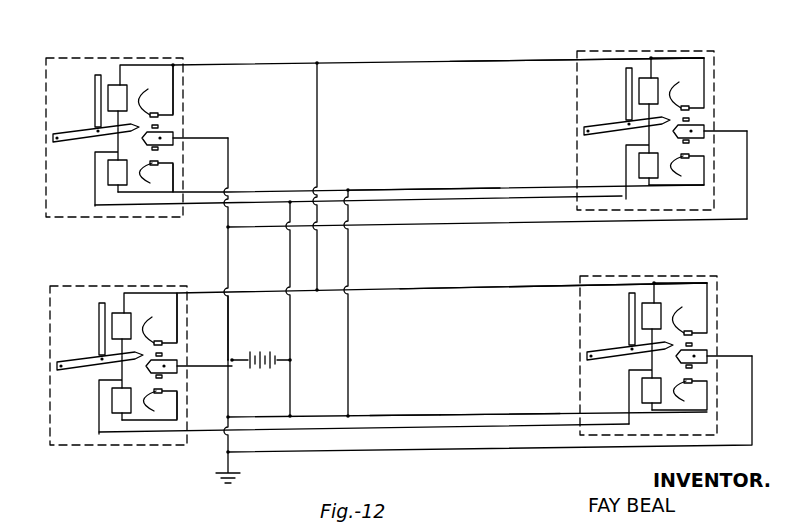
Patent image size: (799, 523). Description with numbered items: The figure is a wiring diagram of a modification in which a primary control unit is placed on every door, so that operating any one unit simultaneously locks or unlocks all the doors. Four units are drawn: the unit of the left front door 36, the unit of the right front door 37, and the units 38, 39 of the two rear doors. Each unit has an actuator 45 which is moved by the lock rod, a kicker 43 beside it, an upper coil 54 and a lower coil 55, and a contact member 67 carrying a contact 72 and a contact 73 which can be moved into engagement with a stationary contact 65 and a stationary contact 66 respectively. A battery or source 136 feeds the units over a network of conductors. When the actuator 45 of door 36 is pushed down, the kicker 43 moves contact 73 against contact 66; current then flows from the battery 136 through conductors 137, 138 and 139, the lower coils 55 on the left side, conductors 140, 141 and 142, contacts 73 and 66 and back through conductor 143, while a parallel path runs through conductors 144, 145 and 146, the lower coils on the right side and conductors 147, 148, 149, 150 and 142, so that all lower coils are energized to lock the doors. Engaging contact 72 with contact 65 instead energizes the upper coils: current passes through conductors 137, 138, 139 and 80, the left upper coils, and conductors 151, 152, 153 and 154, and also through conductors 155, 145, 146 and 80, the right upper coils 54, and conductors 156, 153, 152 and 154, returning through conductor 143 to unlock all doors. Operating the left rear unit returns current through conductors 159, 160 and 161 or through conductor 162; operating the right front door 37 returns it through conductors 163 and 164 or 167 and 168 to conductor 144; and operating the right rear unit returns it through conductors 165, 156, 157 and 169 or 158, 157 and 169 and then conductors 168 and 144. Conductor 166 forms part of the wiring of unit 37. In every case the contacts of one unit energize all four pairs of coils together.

The left front door 36 is at (56, 284).
The right front door 37 is at (50, 58).
The relay unit 38 is at (717, 285).
The relay unit 39 is at (713, 52).
The armature 43 is at (80, 135).
The actuator 45 is at (95, 86).
The upper coil 54 is at (116, 85).
The lower coil 55 is at (108, 173).
The contact 65 is at (419, 209).
The stationary contact 66 is at (420, 284).
The movable contact 67 is at (173, 133).
The contact 72 is at (158, 127).
The contact 73 is at (158, 149).
The conductor 80 is at (112, 143).
The battery 136 is at (281, 331).
The conductor 137 is at (293, 392).
The conductor 138 is at (255, 442).
The conductor 139 is at (414, 414).
The conductor 140 is at (148, 420).
The conductor 141 is at (500, 412).
The conductor 142 is at (179, 403).
The conductor 143 is at (231, 337).
The conductor 144 is at (228, 252).
The conductor 145 is at (272, 208).
The conductor 146 is at (499, 188).
The conductor 147 is at (250, 192).
The conductor 148 is at (389, 190).
The conductor 149 is at (350, 252).
The conductor 150 is at (252, 408).
The conductor 151 is at (463, 288).
The conductor 152 is at (243, 292).
The conductor 153 is at (150, 293).
The conductor 154 is at (179, 306).
The conductor 155 is at (292, 322).
The conductor 156 is at (238, 64).
The conductor 157 is at (505, 61).
The conductor 158 is at (318, 107).
The conductor 159 is at (685, 411).
The conductor 160 is at (522, 449).
The conductor 161 is at (234, 395).
The conductor 162 is at (698, 283).
The conductor 163 is at (152, 193).
The conductor 164 is at (175, 181).
The conductor 165 is at (147, 65).
The conductor 166 is at (183, 83).
The conductor 167 is at (680, 186).
The conductor 168 is at (688, 219).
The conductor 169 is at (686, 58).